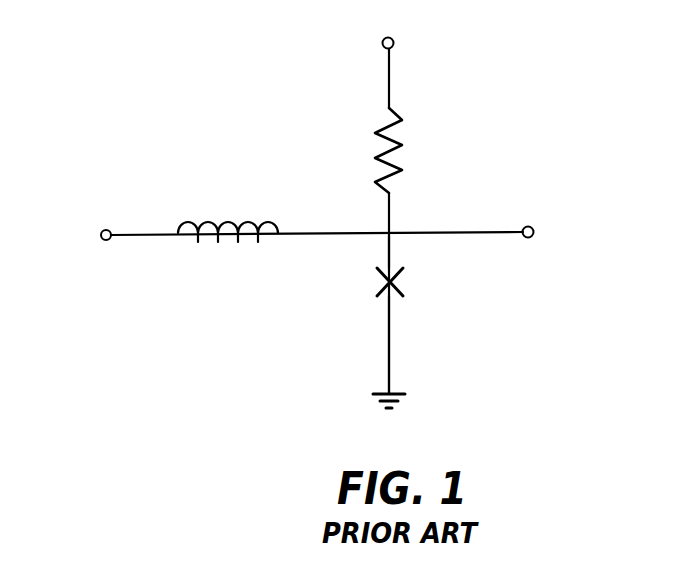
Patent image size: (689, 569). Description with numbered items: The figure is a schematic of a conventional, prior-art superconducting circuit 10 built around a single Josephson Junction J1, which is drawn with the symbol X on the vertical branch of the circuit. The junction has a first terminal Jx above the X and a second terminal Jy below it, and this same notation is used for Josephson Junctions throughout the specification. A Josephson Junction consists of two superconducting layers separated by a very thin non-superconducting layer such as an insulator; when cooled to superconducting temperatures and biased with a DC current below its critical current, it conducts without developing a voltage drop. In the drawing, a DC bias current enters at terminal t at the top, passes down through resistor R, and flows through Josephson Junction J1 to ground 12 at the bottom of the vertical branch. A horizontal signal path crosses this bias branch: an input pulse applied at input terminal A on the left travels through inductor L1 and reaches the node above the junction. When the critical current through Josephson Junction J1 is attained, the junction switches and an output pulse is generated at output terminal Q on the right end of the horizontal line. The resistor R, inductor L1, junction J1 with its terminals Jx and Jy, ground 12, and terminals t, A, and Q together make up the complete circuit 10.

The superconducting circuit 10 is at (216, 137).
The ground 12 is at (401, 391).
The resistor R is at (398, 142).
The inductor L1 is at (250, 222).
The Josephson Junction J1 is at (398, 285).
The first terminal Jx is at (390, 252).
The second terminal Jy is at (390, 348).
The input terminal A is at (79, 229).
The output terminal Q is at (547, 226).
The terminal t is at (398, 43).